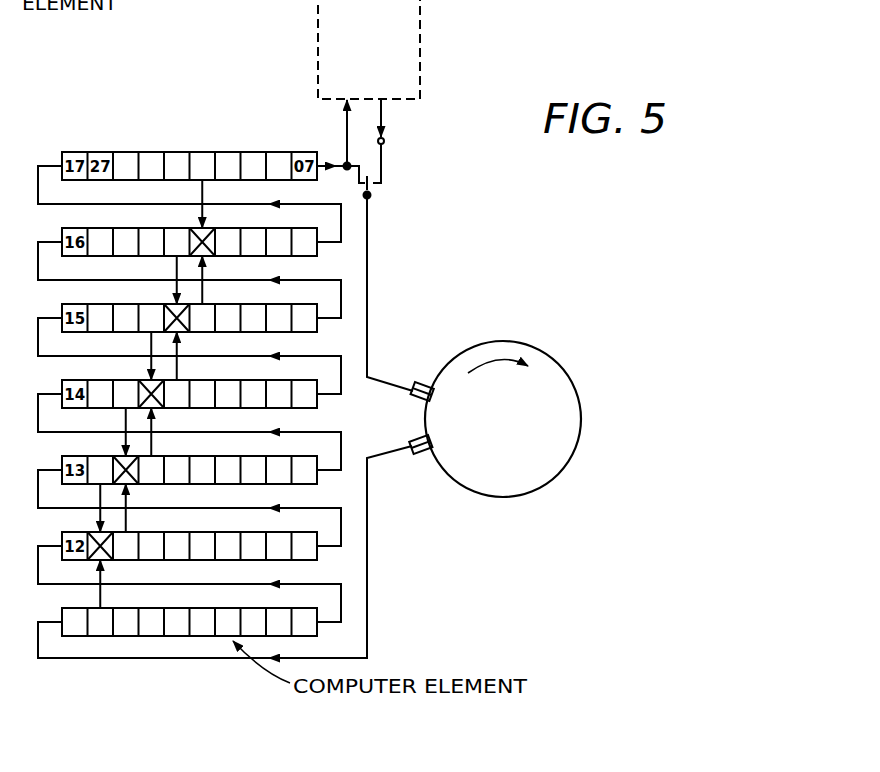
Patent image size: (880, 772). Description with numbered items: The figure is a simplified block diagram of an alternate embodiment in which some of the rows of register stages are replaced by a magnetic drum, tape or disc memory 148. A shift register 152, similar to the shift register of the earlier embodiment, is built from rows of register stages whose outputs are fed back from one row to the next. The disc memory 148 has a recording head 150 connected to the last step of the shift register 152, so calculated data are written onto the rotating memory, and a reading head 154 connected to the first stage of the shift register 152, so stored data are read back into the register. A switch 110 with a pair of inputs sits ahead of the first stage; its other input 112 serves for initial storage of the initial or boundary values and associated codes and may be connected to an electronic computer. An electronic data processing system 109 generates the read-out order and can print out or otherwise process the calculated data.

The electronic data processing system 109 is at (424, 37).
The switch 110 is at (382, 162).
The input 112 is at (384, 139).
The disc memory 148 is at (553, 478).
The recording head 150 is at (422, 384).
The shift register 152 is at (143, 640).
The reading head 154 is at (427, 454).